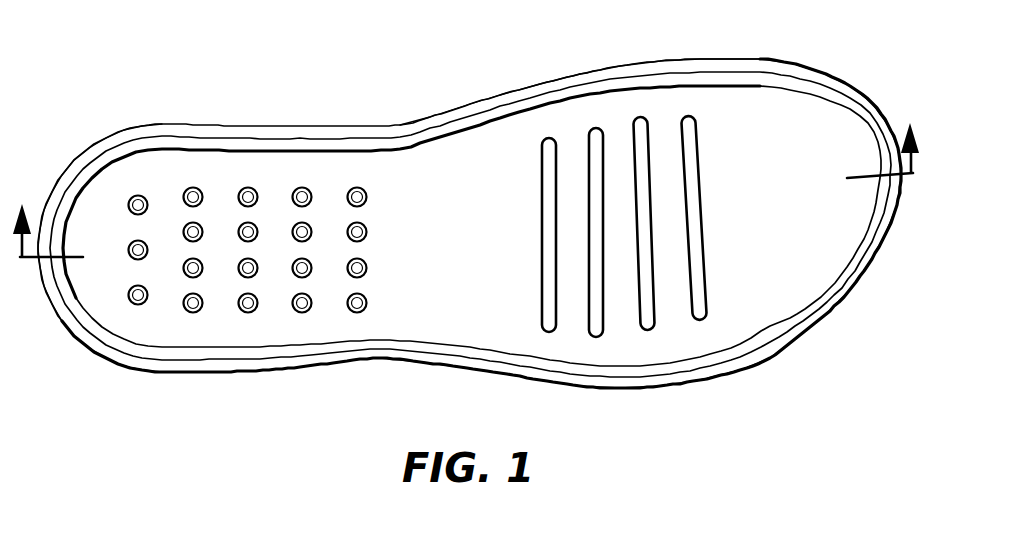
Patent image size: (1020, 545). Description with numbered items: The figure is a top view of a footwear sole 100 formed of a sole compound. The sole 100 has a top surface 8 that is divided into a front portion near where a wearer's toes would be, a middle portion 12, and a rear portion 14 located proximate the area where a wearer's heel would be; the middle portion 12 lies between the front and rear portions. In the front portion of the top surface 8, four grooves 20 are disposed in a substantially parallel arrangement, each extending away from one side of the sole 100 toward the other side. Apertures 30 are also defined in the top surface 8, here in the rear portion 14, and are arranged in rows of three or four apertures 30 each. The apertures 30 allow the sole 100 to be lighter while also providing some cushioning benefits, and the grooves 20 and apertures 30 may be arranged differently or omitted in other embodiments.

The footwear sole 100 is at (703, 411).
The top surface 8 is at (777, 120).
The middle portion 12 is at (462, 190).
The rear portion 14 is at (98, 188).
The grooves 20 is at (601, 200).
The apertures 30 is at (303, 190).